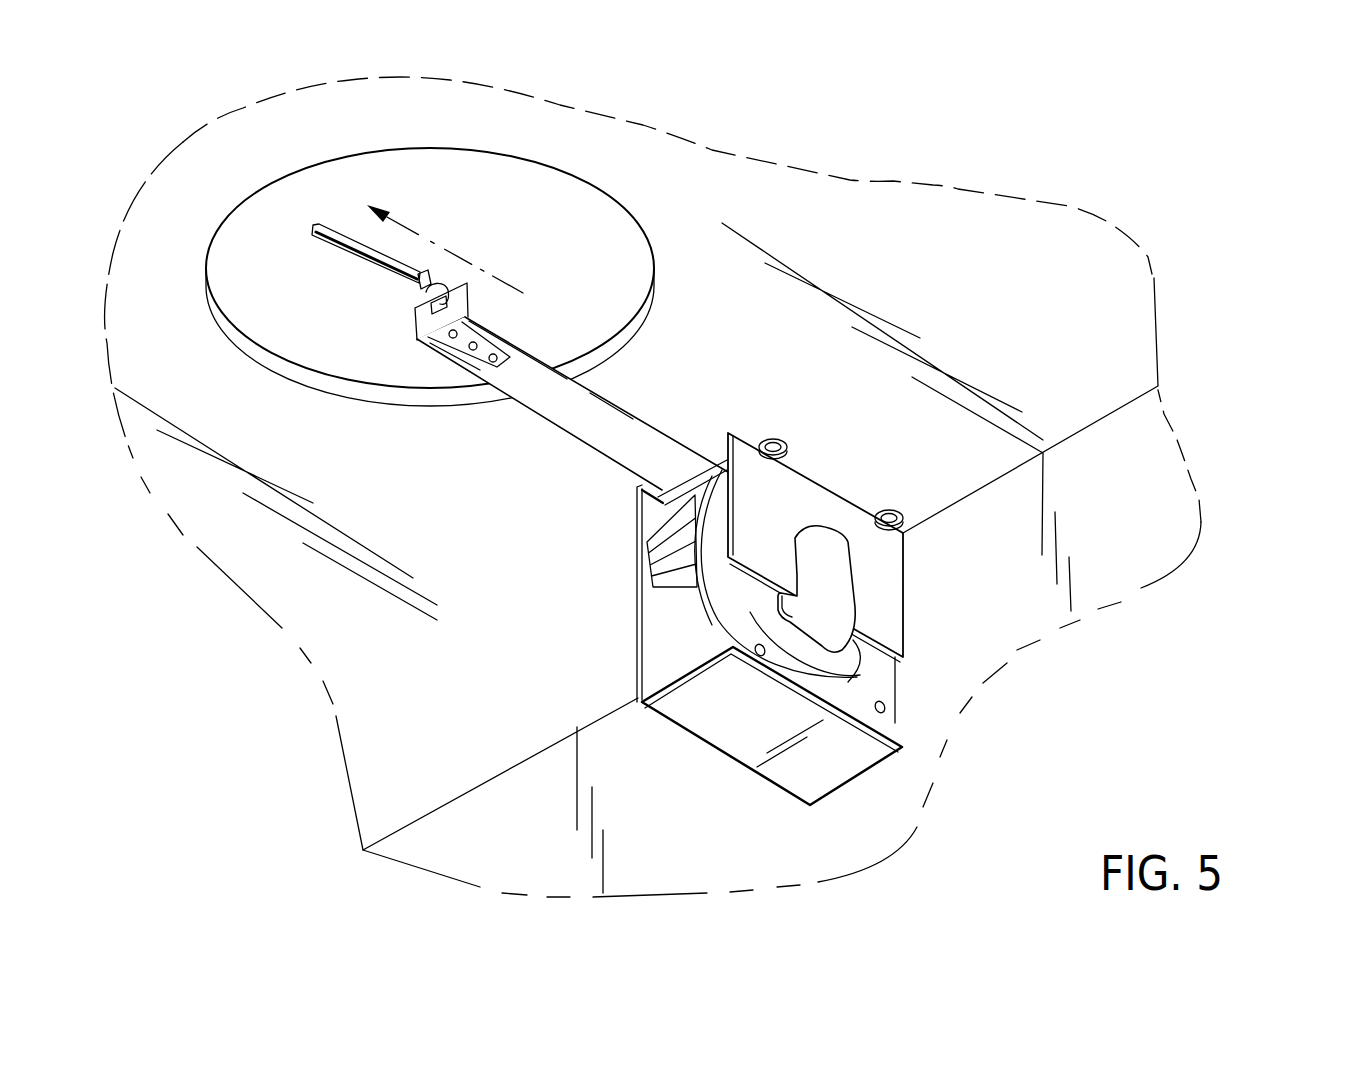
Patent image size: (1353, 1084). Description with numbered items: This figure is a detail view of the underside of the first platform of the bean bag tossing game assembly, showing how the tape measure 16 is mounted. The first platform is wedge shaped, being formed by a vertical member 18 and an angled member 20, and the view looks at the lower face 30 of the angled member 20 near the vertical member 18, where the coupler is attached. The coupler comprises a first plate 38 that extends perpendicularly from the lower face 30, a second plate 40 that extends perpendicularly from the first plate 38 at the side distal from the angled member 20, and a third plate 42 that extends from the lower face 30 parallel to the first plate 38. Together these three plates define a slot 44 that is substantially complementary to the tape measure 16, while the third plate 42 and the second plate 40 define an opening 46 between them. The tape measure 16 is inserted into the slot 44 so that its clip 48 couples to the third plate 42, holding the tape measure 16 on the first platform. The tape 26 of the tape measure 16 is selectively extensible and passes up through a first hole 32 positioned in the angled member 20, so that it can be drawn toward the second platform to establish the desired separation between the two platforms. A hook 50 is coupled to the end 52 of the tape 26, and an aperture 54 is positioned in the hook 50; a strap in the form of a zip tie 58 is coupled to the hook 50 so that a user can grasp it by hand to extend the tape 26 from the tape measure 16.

The tape measure 16 is at (697, 640).
The vertical member 18 is at (1148, 483).
The angled member 20 is at (1079, 338).
The tape 26 is at (560, 373).
The lower face 30 is at (757, 347).
The first hole 32 is at (550, 163).
The first plate 38 is at (637, 655).
The second plate 40 is at (708, 733).
The third plate 42 is at (878, 571).
The slot 44 is at (677, 592).
The opening 46 is at (840, 668).
The clip 48 is at (840, 612).
The hook 50 is at (462, 293).
The end 52 is at (417, 341).
The aperture 54 is at (438, 287).
The zip tie 58 is at (330, 222).